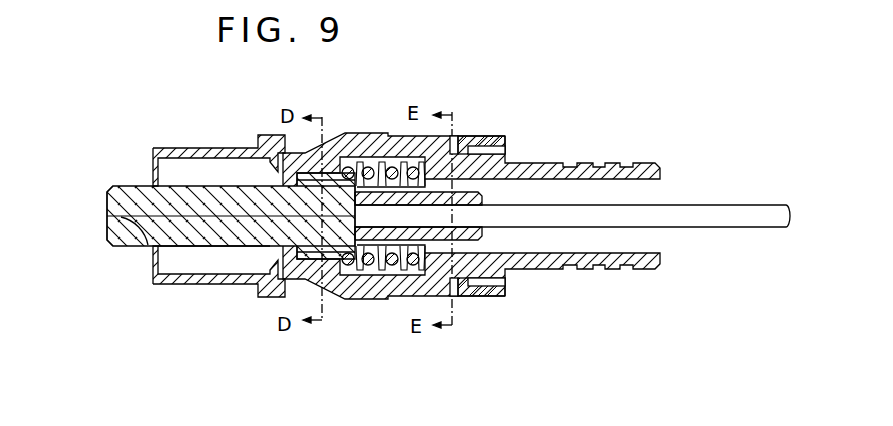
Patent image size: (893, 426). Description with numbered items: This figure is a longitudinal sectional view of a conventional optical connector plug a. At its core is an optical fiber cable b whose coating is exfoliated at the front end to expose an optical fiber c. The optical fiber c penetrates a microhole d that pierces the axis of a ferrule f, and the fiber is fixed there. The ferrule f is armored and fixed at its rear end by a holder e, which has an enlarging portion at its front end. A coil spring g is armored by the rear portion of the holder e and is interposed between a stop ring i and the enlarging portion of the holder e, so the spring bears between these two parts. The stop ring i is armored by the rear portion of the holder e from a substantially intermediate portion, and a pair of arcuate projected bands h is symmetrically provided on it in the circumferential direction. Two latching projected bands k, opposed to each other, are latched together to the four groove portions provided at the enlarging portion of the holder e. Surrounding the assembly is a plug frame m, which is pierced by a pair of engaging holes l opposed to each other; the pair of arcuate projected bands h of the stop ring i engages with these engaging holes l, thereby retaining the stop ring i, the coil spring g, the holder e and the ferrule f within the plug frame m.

The optical connector plug a is at (116, 180).
The optical fiber cable b is at (720, 201).
The optical fiber c is at (107, 213).
The microhole d is at (122, 248).
The holder e is at (494, 190).
The ferrule f is at (208, 250).
The coil spring g is at (385, 299).
The arcuate projected bands h is at (472, 135).
The stop ring i is at (606, 155).
The latching projected bands k is at (345, 165).
The engaging holes l is at (456, 134).
The plug frame m is at (203, 144).